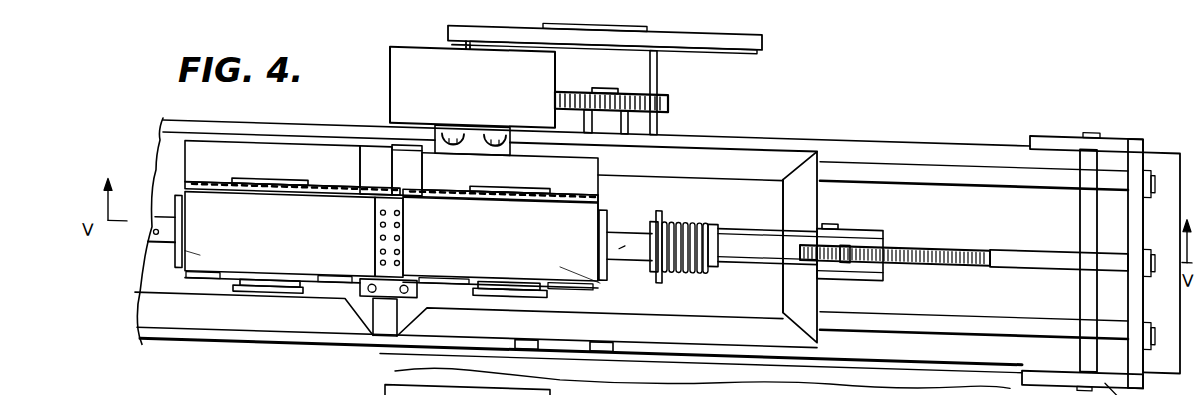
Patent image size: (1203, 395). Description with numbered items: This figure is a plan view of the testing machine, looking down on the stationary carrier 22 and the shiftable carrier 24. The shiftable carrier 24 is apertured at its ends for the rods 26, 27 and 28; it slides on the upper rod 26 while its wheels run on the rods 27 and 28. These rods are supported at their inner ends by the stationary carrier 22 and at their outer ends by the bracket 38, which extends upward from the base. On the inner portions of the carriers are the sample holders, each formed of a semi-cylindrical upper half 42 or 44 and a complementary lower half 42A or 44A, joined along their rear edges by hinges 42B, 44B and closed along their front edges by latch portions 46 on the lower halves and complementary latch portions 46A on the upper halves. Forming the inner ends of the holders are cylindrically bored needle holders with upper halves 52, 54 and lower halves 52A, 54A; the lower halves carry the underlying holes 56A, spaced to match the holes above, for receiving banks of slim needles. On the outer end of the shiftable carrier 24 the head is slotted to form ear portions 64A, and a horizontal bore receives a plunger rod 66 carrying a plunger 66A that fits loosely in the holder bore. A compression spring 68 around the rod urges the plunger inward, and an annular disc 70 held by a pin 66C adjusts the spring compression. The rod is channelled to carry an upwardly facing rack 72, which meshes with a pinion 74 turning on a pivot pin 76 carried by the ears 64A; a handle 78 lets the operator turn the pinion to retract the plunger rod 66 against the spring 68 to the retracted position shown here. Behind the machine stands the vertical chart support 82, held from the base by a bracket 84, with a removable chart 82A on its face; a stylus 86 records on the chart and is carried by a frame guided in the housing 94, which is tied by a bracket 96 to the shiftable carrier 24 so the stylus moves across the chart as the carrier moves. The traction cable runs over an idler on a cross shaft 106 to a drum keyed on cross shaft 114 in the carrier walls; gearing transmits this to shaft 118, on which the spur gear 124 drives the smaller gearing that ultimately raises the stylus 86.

The stationary carrier 22 is at (168, 275).
The shiftable carrier 24 is at (757, 272).
The upper rod 26 is at (1013, 234).
The rod 27 is at (900, 311).
The rod 28 is at (897, 163).
The bracket 38 is at (1123, 108).
The upper half of holder 42 is at (200, 163).
The lower half of holder 42A is at (200, 254).
The hinge 42B is at (283, 191).
The upper half of holder 44 is at (598, 169).
The lower half of holder 44A is at (575, 260).
The hinge 44B is at (480, 190).
The latch portion 46 is at (284, 285).
The complementary latch portion 46A is at (272, 178).
The upper half of needle holder 52 is at (370, 164).
The lower half of needle holder 52A is at (380, 256).
The upper half of needle holder 54 is at (422, 162).
The lower half of needle holder 54A is at (400, 256).
The underlying holes 56A is at (380, 218).
The ear portion 64A is at (850, 216).
The plunger rod 66 is at (160, 215).
The plunger 66A is at (180, 217).
The pin 66C is at (660, 196).
The compression spring 68 is at (688, 258).
The annular disc 70 is at (664, 200).
The rack 72 is at (943, 224).
The pinion 74 is at (858, 237).
The pivot pin 76 is at (832, 204).
The handle 78 is at (745, 228).
The chart support 82 is at (745, 20).
The chart 82A is at (707, 36).
The bracket 84 is at (648, 13).
The stylus 86 is at (452, 37).
The housing 94 is at (389, 98).
The bracket 96 is at (470, 118).
The cross shaft 106 is at (1090, 276).
The cross shaft 114 is at (580, 339).
The shaft 118 is at (612, 75).
The spur gear 124 is at (672, 88).